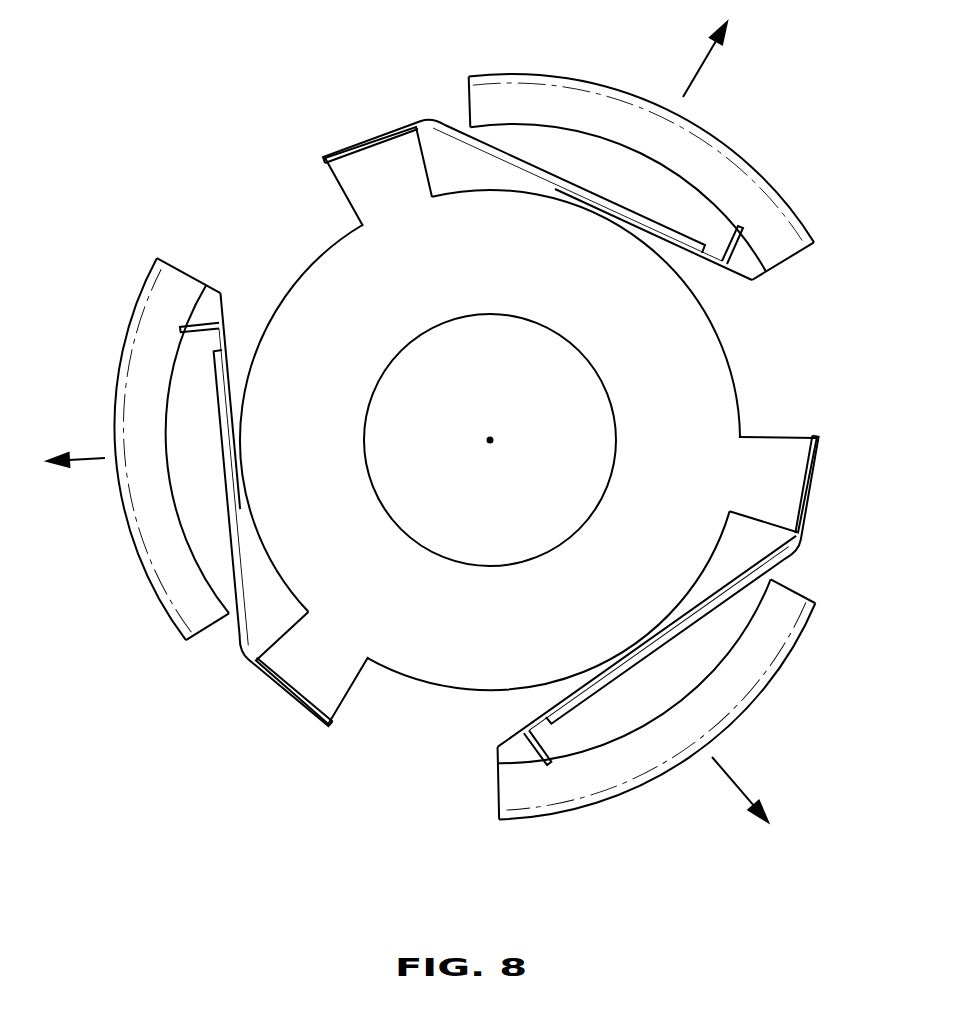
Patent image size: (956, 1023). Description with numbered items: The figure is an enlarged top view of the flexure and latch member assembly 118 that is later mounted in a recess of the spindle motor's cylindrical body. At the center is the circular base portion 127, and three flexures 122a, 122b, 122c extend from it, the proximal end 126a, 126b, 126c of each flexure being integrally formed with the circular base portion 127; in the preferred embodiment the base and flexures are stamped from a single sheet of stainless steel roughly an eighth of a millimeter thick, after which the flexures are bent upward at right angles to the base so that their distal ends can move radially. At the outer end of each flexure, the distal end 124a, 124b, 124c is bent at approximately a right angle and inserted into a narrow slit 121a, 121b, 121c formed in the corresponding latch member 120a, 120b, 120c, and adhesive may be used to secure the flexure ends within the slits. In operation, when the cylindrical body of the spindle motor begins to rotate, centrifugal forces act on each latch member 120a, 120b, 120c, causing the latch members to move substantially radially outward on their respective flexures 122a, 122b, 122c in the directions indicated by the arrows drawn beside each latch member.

The flexure and latch member assembly 118 is at (317, 250).
The latch member 120a is at (543, 103).
The latch member 120b is at (775, 640).
The latch member 120c is at (160, 316).
The slit 121a is at (733, 250).
The slit 121b is at (537, 762).
The slit 121c is at (205, 324).
The flexure 122a is at (527, 172).
The flexure 122b is at (737, 590).
The flexure 122c is at (247, 500).
The distal end 124a is at (757, 279).
The distal end 124b is at (503, 815).
The distal end 124c is at (222, 292).
The proximal end 126a is at (375, 134).
The proximal end 126b is at (823, 477).
The proximal end 126c is at (290, 695).
The circular base portion 127 is at (418, 630).